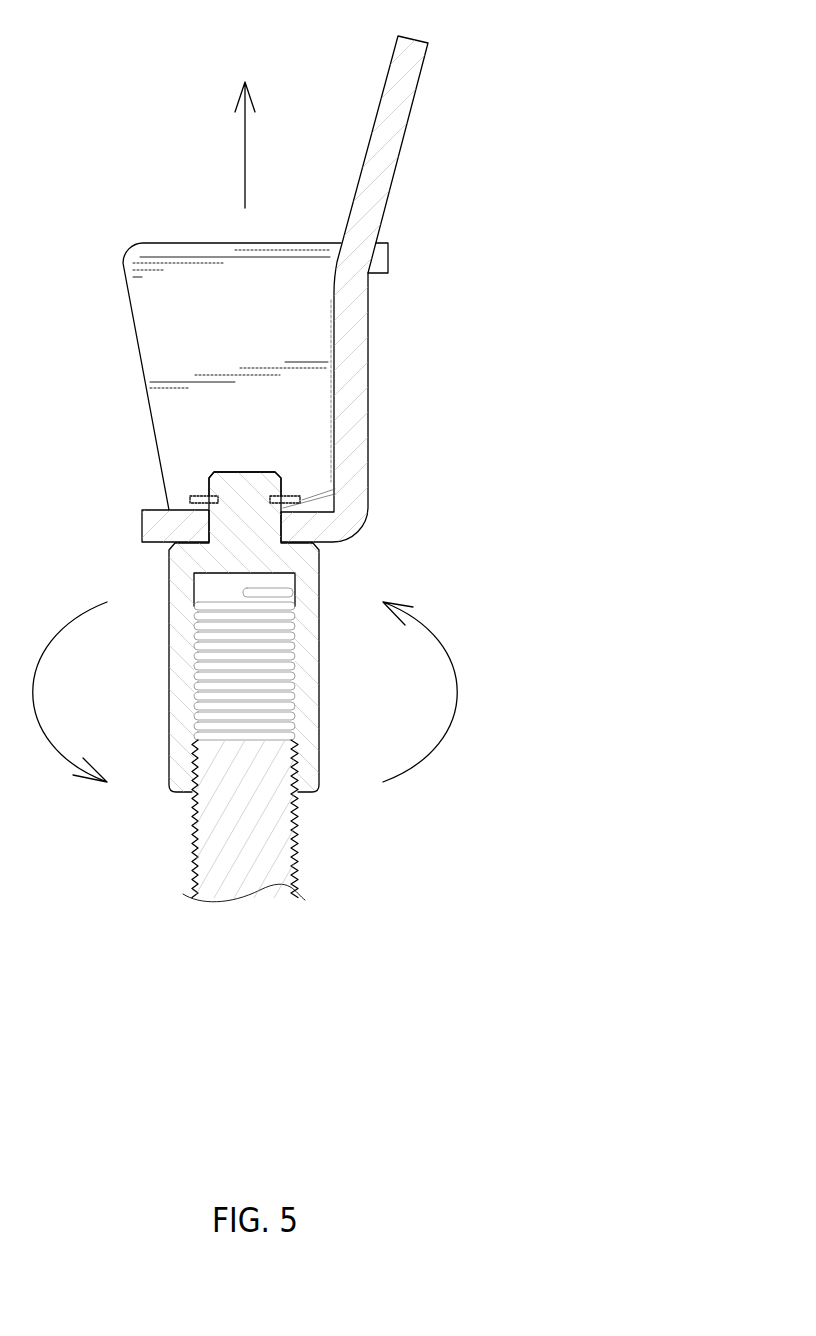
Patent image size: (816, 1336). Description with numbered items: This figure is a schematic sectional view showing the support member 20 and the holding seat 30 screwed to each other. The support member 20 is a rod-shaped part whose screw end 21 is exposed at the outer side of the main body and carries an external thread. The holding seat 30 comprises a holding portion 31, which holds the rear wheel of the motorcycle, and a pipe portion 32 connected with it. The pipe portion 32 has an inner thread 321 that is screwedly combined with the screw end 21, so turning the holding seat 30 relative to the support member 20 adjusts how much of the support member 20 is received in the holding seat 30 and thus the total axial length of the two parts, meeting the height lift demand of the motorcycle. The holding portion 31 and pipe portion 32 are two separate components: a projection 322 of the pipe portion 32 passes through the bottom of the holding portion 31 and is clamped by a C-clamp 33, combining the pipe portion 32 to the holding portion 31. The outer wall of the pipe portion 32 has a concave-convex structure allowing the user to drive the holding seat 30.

The support member 20 is at (263, 823).
The screw end 21 is at (295, 770).
The holding seat 30 is at (425, 188).
The holding portion 31 is at (348, 329).
The pipe portion 32 is at (337, 606).
The C-clamp 33 is at (190, 498).
The inner thread 321 is at (383, 838).
The projection 322 is at (238, 472).